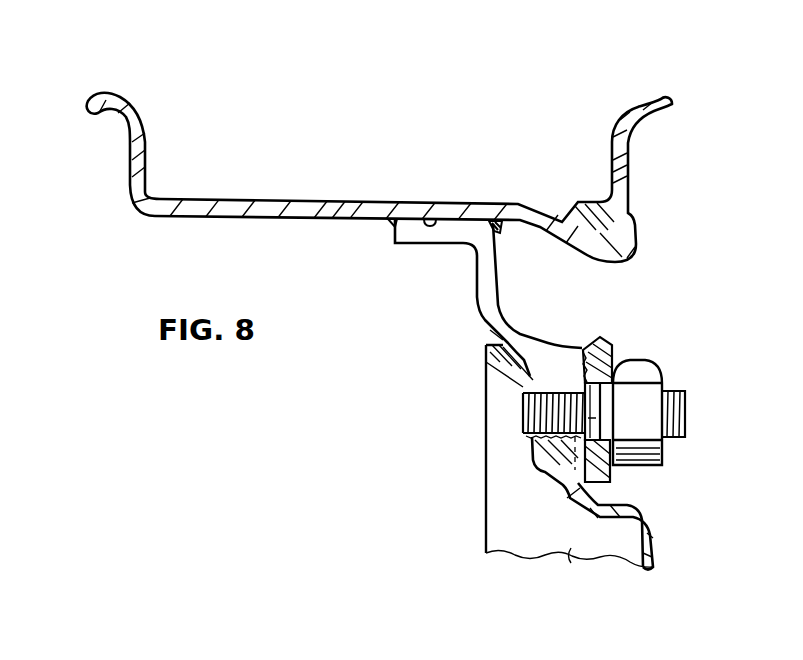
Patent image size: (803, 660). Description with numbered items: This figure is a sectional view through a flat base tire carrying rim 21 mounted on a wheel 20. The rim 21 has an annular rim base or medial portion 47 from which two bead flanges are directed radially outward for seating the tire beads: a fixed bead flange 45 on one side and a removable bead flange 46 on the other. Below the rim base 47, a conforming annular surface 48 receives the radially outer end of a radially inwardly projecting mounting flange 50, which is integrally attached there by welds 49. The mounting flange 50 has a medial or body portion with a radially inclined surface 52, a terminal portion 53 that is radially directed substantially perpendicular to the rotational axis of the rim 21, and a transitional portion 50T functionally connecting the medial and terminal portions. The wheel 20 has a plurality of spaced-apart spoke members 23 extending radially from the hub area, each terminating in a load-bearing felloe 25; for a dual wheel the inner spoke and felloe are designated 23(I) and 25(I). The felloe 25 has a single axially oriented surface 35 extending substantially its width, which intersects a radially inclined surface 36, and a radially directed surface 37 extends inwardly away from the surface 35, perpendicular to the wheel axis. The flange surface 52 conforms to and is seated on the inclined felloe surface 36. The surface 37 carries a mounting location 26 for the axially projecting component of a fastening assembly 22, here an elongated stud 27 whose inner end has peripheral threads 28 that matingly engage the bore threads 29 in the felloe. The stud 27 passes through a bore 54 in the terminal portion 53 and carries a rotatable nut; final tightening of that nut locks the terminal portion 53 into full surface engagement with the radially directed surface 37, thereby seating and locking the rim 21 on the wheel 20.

The wheel 20 is at (471, 509).
The tire carrying rim 21 is at (302, 155).
The fastening assembly 22 is at (677, 455).
The spoke member 23 is at (568, 558).
The felloe 25 is at (483, 376).
The mounting location 26 is at (521, 413).
The elongated stud 27 is at (518, 428).
The peripheral threads 28 is at (535, 441).
The bore threads 29 is at (563, 478).
The axially oriented surface 35 is at (551, 373).
The radially inclined surface 36 is at (524, 348).
The radially directed surface 37 is at (594, 474).
The fixed bead flange 45 is at (143, 143).
The removable bead flange 46 is at (620, 133).
The rim base 47 is at (337, 204).
The conforming annular surface 48 is at (433, 219).
The welds 49 is at (500, 230).
The rim mounting flange 50 is at (580, 302).
The transitional portion 50T is at (520, 387).
The radially inclined surface 52 is at (485, 349).
The terminal portion 53 is at (612, 468).
The bore 54 is at (607, 400).